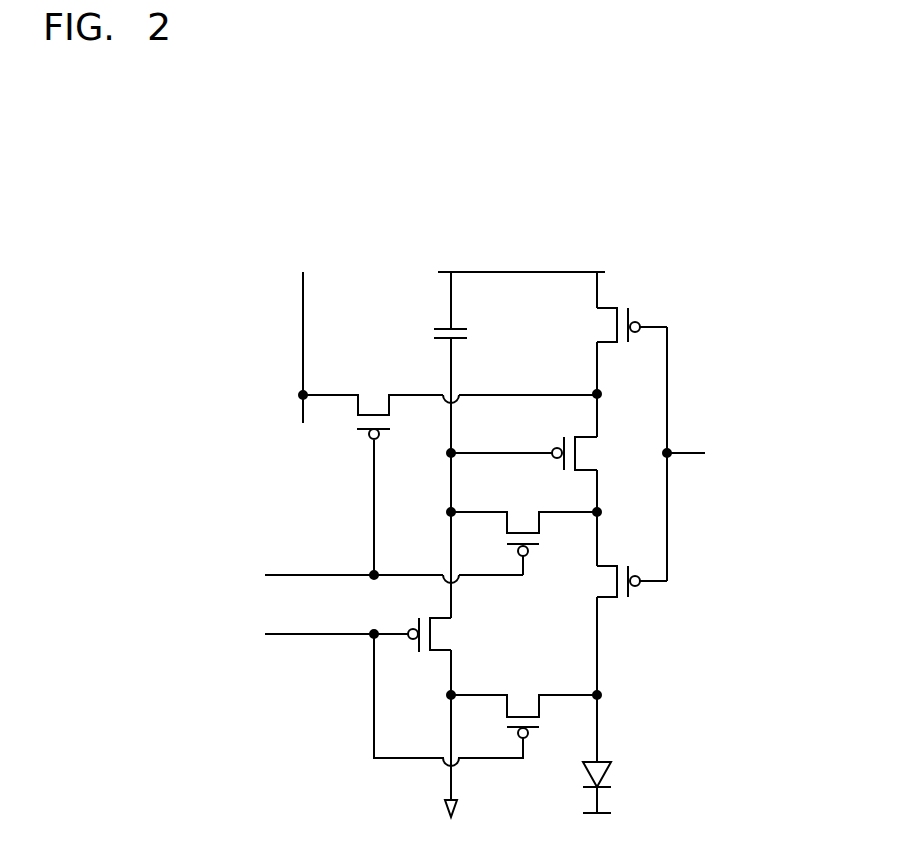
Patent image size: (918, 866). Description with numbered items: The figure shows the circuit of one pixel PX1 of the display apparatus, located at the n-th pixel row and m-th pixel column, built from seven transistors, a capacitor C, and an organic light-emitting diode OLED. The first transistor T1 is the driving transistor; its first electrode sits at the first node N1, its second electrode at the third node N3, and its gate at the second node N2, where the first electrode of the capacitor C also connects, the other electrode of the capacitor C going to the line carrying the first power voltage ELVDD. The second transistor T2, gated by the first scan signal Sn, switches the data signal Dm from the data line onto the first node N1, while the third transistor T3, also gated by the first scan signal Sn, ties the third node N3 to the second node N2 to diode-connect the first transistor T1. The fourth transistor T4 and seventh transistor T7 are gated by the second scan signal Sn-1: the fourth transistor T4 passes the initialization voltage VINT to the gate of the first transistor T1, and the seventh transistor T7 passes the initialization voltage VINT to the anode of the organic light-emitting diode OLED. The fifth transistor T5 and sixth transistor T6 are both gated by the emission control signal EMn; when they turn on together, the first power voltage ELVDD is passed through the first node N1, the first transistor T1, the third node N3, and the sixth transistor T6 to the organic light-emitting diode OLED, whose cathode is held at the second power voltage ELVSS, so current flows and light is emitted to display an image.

The pixel PX1 is at (653, 227).
The data signal Dm is at (303, 332).
The first power voltage ELVDD is at (535, 256).
The capacitor C is at (461, 309).
The fifth transistor T5 is at (619, 325).
The second transistor T2 is at (373, 402).
The first node N1 is at (612, 392).
The second node N2 is at (482, 454).
The first transistor T1 is at (586, 453).
The emission control signal EMn is at (710, 454).
The third transistor T3 is at (522, 529).
The third node N3 is at (613, 512).
The first scan signal Sn is at (336, 579).
The sixth transistor T6 is at (619, 581).
The second scan signal Sn-1 is at (306, 637).
The fourth transistor T4 is at (442, 635).
The seventh transistor T7 is at (524, 702).
The organic light-emitting diode OLED is at (630, 787).
The initialization voltage VINT is at (450, 824).
The second power voltage ELVSS is at (596, 830).